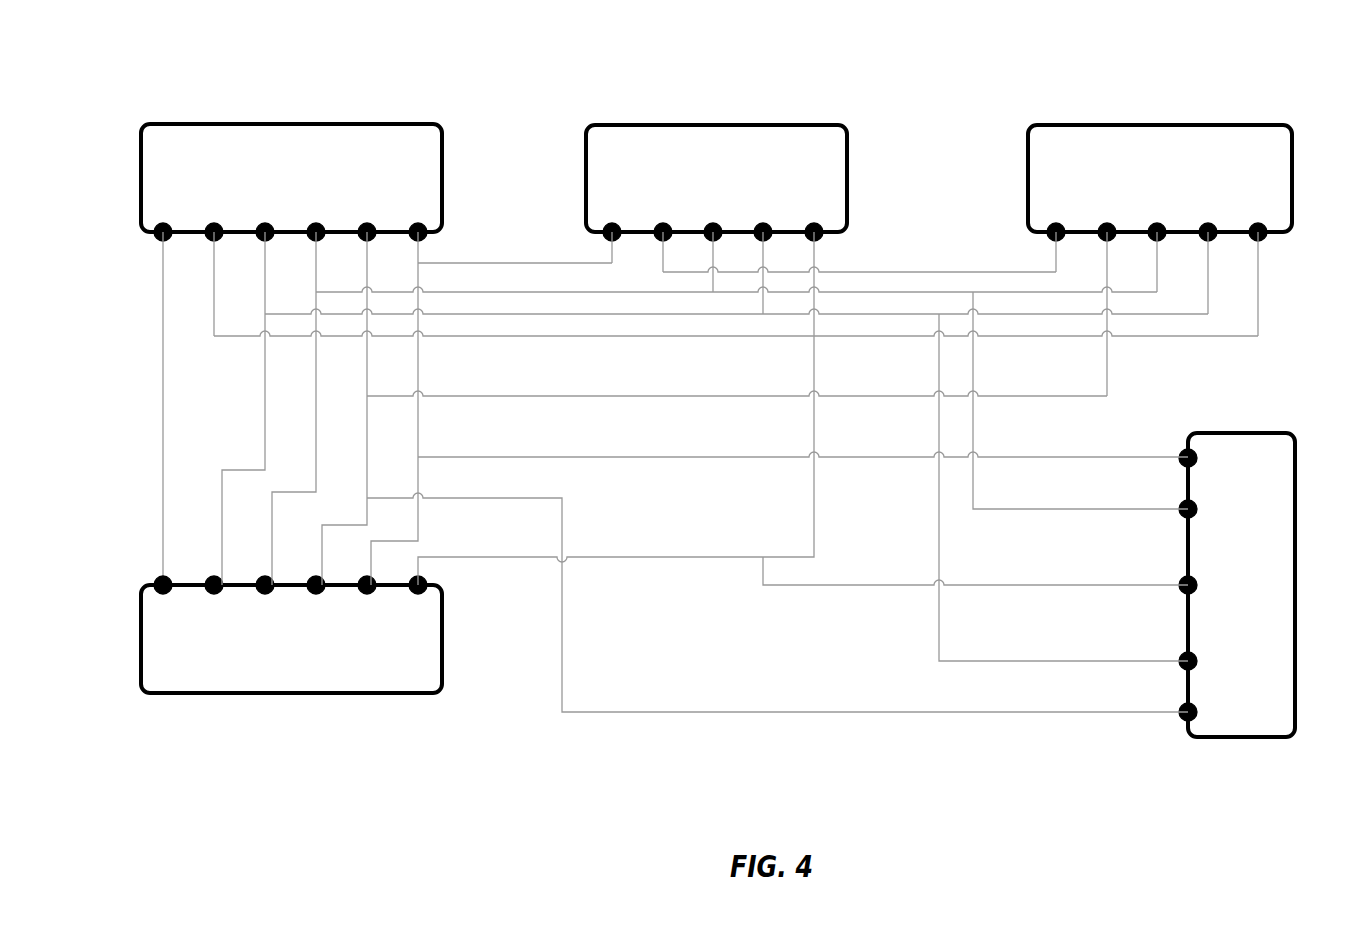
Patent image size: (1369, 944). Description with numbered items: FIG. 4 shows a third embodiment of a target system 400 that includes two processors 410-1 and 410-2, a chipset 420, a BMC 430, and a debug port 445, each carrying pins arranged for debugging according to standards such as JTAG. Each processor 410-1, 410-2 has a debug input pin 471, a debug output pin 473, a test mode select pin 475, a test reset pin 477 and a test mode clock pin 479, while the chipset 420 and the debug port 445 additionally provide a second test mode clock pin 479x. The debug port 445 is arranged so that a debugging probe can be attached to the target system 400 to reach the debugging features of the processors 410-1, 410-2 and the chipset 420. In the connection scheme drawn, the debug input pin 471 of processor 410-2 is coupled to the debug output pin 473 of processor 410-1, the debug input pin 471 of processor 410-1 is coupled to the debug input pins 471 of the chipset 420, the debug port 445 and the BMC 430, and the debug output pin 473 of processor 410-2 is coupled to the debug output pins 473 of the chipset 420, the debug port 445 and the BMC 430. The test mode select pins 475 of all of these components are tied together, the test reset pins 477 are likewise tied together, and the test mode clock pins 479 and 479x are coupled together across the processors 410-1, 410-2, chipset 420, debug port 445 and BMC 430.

The target system 400 is at (807, 41).
The chipset 420 is at (348, 105).
The processor 410-1 is at (792, 115).
The processor 410-2 is at (1235, 115).
The BMC 430 is at (1322, 421).
The debug port 445 is at (308, 761).
The debug input pin 471 is at (403, 207).
The debug output pin 473 is at (352, 207).
The test mode select pin 475 is at (301, 207).
The test reset pin 477 is at (250, 207).
The test mode clock pin 479 is at (148, 207).
The test mode clock pin 479x is at (194, 207).